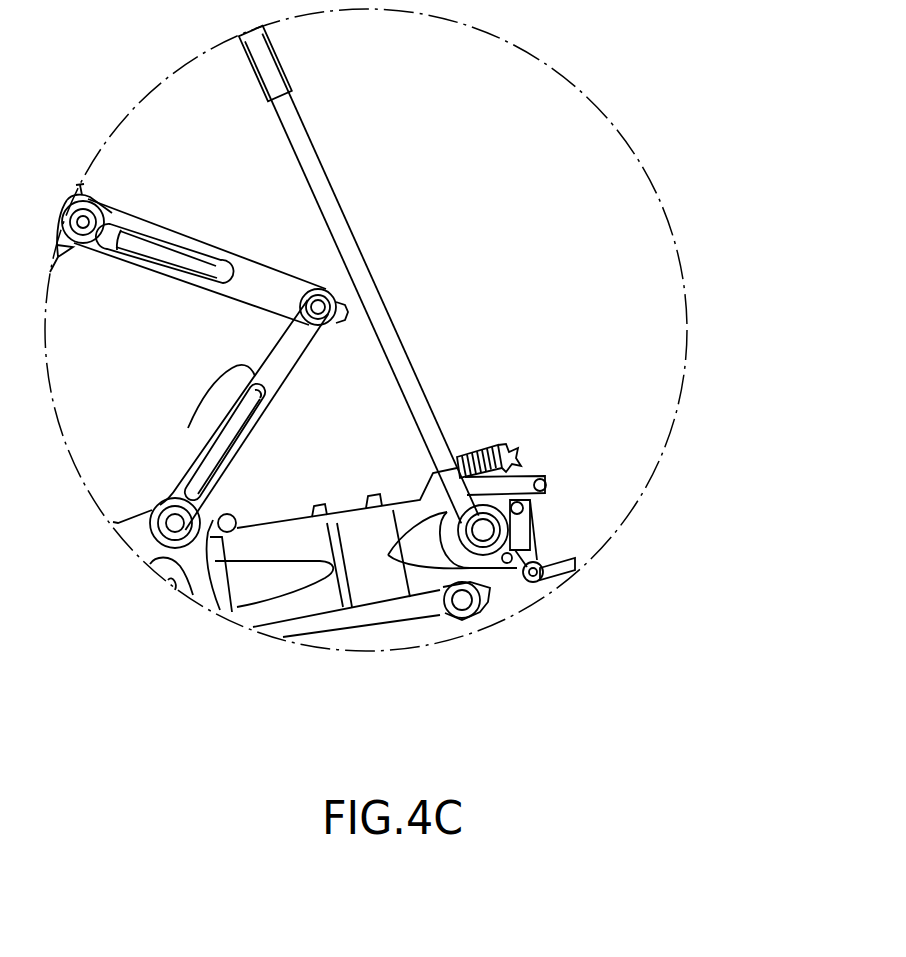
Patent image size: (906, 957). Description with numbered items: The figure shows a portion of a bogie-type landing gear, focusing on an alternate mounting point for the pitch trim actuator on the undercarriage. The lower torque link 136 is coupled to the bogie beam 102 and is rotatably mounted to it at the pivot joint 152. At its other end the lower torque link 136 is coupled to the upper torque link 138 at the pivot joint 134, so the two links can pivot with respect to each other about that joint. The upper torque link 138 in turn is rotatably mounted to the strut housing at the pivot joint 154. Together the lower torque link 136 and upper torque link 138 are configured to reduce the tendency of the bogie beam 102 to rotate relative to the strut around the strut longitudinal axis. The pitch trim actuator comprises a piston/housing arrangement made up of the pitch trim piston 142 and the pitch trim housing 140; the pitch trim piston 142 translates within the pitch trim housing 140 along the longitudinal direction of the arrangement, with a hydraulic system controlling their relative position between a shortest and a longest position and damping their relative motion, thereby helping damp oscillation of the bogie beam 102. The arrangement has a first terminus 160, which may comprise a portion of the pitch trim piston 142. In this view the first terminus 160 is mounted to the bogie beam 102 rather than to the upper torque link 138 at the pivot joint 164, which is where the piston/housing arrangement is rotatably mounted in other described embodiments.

The bogie beam 102 is at (480, 508).
The pivot joint 134 is at (323, 317).
The lower torque link 136 is at (276, 404).
The upper torque link 138 is at (220, 252).
The pitch trim housing 140 is at (278, 76).
The pitch trim piston 142 is at (323, 173).
The pivot joint 152 is at (176, 522).
The pivot joint 154 is at (83, 225).
The first terminus 160 is at (472, 508).
The pivot joint 164 is at (205, 413).